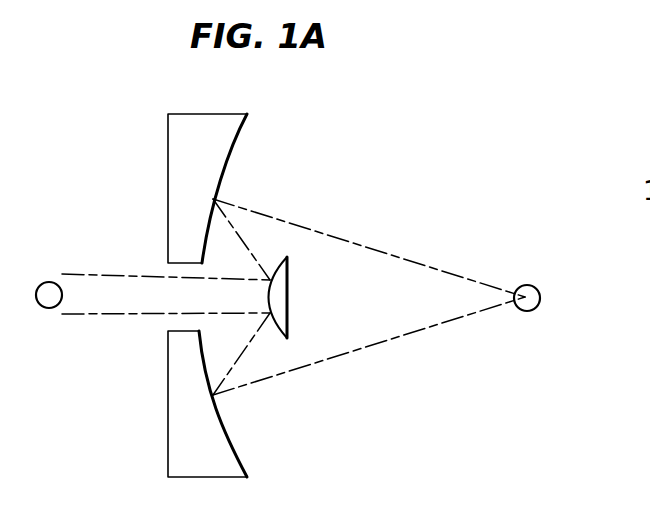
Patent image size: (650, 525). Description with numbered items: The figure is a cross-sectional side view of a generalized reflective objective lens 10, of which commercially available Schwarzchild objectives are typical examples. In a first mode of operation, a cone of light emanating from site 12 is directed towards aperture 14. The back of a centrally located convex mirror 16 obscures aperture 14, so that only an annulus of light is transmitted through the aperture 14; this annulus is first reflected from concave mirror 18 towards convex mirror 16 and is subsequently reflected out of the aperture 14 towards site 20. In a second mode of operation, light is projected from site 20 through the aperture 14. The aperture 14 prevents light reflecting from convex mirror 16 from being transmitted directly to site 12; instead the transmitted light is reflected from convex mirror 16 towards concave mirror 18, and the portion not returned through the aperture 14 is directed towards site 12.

The reflective objective lens 10 is at (300, 157).
The site 12 is at (530, 287).
The aperture 14 is at (167, 265).
The convex mirror 16 is at (283, 268).
The concave mirror 18 is at (231, 451).
The site 20 is at (47, 281).